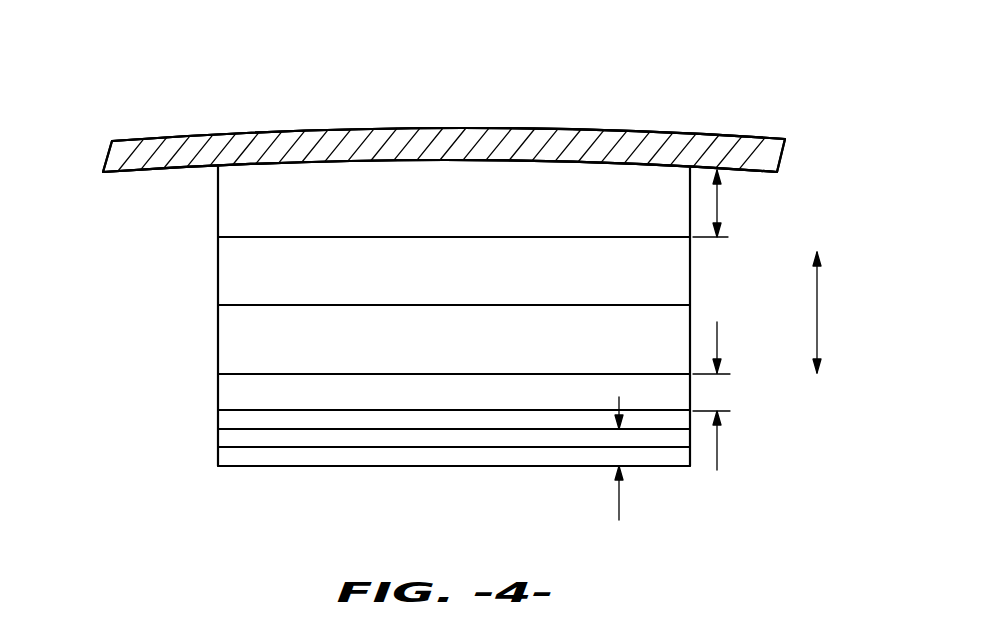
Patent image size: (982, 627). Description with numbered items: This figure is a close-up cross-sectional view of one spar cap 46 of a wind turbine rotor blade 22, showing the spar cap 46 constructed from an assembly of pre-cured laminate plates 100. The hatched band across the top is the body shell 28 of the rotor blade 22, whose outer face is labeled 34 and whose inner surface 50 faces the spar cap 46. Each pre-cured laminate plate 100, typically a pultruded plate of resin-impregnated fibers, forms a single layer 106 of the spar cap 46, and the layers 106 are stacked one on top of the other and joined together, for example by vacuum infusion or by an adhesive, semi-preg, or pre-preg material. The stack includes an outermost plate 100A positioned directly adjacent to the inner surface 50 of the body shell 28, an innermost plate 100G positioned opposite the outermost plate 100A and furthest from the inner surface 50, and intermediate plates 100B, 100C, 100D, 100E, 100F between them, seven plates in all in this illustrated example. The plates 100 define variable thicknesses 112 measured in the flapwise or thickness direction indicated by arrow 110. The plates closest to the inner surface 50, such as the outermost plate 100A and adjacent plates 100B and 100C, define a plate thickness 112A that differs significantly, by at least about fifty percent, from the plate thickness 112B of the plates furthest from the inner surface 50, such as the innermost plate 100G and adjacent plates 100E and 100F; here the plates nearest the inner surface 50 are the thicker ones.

The rotor blade 22 is at (615, 97).
The body shell 28 is at (161, 139).
The outer surface 34 is at (254, 134).
The inner surface 50 is at (133, 172).
The spar cap 46 is at (142, 280).
The pre-cured laminate plates 100 is at (235, 315).
The outermost plate 100A is at (482, 215).
The intermediate plate 100B is at (482, 283).
The intermediate plate 100C is at (482, 352).
The intermediate plate 100D is at (484, 406).
The intermediate plate 100E is at (410, 421).
The intermediate plate 100F is at (457, 438).
The innermost plate 100G is at (487, 455).
The layer 106 is at (203, 303).
The flapwise or thickness direction 110 is at (816, 305).
The variable thicknesses 112 is at (718, 447).
The plate thickness 112A is at (719, 200).
The plate thickness 112B is at (620, 487).